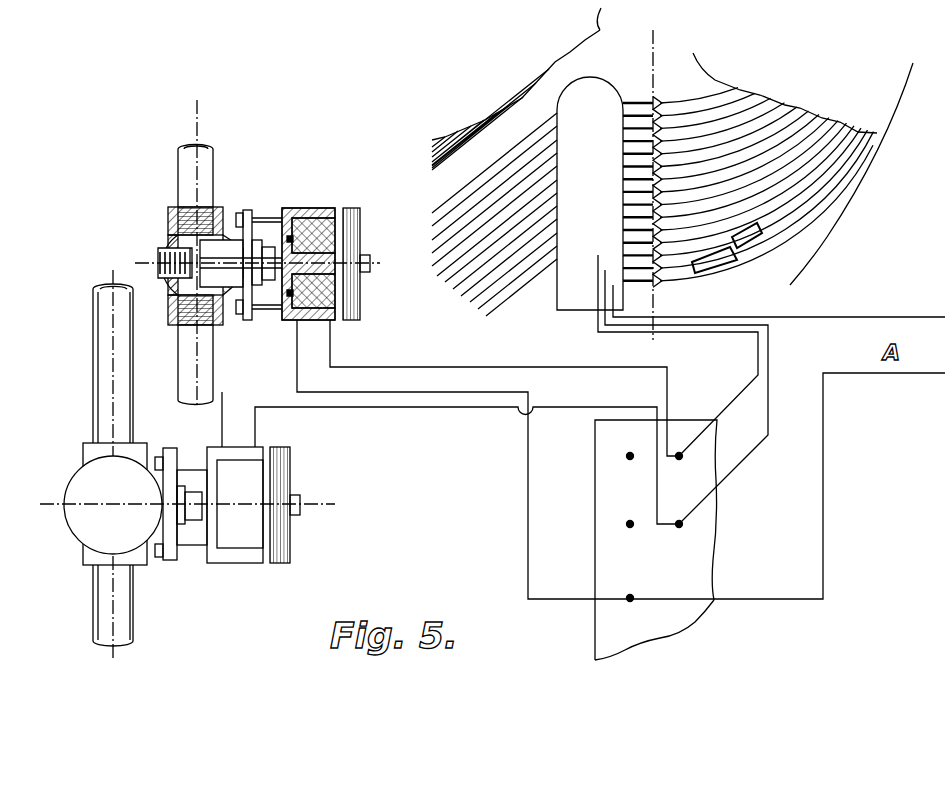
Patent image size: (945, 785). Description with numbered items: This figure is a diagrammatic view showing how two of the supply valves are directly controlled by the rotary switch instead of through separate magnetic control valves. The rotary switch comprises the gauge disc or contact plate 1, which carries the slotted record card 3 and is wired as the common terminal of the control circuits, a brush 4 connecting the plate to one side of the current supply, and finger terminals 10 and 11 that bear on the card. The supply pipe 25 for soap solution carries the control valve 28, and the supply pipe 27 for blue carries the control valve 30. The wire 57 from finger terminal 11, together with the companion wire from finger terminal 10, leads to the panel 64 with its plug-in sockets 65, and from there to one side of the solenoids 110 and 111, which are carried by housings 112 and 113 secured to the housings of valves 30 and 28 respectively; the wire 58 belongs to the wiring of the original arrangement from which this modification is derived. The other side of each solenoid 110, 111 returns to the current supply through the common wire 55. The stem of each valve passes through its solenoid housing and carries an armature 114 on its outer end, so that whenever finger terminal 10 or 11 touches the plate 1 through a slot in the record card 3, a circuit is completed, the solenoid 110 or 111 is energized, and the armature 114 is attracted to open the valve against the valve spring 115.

The contact plate 1 is at (887, 122).
The record card 3 is at (863, 148).
The brush 4 is at (657, 282).
The finger terminal 10 is at (662, 267).
The finger terminal 11 is at (663, 258).
The supply pipe 25 is at (213, 172).
The supply pipe 27 is at (95, 328).
The control valve 28 is at (160, 242).
The control valve 30 is at (72, 512).
The common wire 55 is at (527, 511).
The wire 57 is at (758, 362).
The wire 58 is at (768, 361).
The panel 64 is at (690, 610).
The plug-in socket 65 is at (679, 524).
The solenoid 110 is at (248, 540).
The solenoid 111 is at (323, 253).
The solenoid housing 112 is at (210, 548).
The solenoid housing 113 is at (295, 215).
The armature 114 is at (362, 232).
The valve spring 115 is at (160, 262).